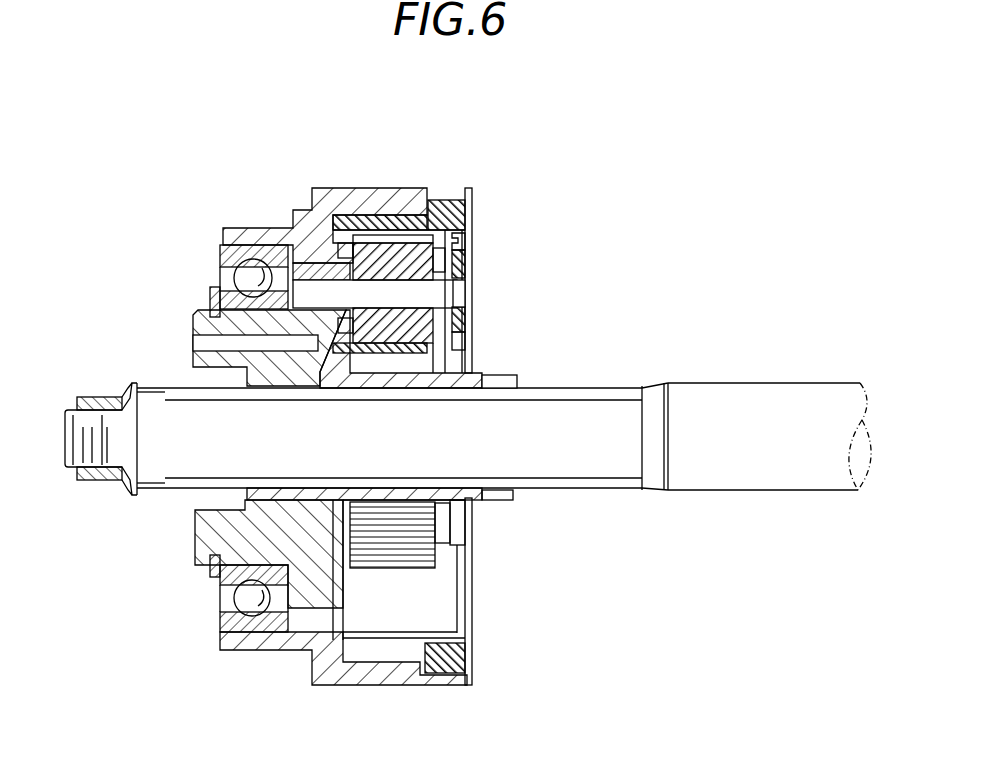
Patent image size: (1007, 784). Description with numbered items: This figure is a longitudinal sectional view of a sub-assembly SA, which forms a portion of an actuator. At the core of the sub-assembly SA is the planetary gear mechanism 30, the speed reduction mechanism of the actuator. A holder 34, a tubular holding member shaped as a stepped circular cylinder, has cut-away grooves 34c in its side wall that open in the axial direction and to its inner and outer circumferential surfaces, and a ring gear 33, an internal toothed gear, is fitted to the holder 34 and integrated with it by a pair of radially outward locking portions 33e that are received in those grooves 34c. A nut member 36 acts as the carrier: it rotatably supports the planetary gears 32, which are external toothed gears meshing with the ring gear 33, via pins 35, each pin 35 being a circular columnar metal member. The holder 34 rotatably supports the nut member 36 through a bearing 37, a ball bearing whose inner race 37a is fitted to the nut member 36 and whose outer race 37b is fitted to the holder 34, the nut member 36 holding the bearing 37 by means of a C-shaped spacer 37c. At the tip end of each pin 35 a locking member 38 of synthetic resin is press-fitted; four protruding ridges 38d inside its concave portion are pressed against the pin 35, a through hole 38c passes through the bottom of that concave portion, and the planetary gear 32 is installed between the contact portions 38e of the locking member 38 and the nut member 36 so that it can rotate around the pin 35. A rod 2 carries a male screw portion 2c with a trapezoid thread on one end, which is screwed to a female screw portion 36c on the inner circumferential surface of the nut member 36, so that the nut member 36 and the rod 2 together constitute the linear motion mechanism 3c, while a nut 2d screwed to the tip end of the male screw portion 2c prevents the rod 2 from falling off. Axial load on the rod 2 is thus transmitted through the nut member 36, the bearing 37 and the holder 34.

The rod 2 is at (788, 408).
The male screw portion 2c is at (153, 485).
The nut 2d is at (98, 481).
The linear motion mechanism 3c is at (500, 540).
The planetary gear mechanism 30 is at (391, 694).
The planetary gear 32 is at (395, 248).
The ring gear 33 is at (372, 215).
The locking portion 33e is at (447, 200).
The holder 34 is at (329, 196).
The cut-away groove 34c is at (448, 187).
The pin 35 is at (295, 262).
The nut member 36 is at (200, 323).
The female screw portion 36c is at (262, 392).
The bearing 37 is at (214, 243).
The inner race 37a is at (223, 580).
The outer race 37b is at (252, 632).
The spacer 37c is at (215, 297).
The locking member 38 is at (476, 250).
The through hole 38c is at (463, 293).
The protruding ridge 38d is at (458, 263).
The contact portion 38e is at (457, 243).
The sub-assembly SA is at (608, 348).